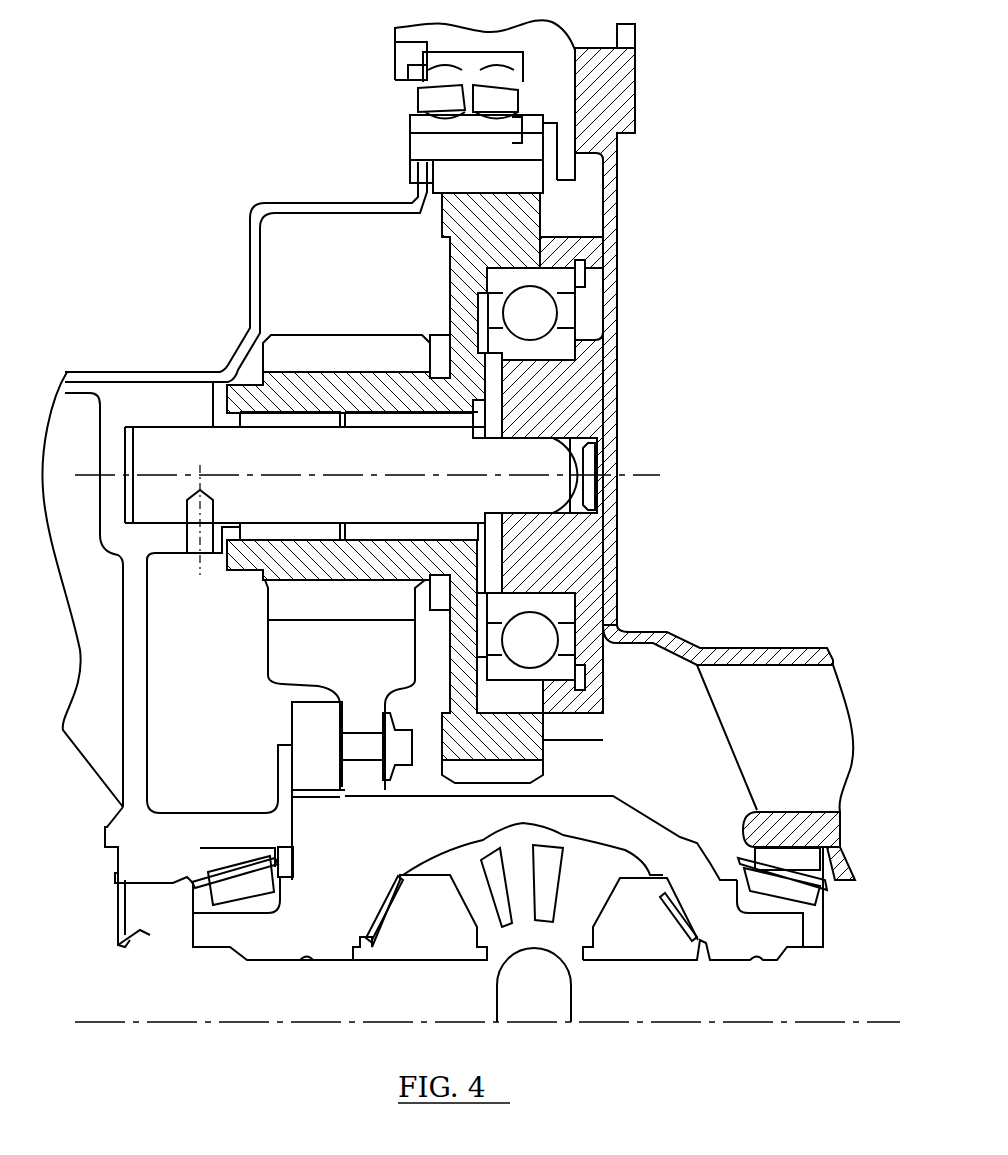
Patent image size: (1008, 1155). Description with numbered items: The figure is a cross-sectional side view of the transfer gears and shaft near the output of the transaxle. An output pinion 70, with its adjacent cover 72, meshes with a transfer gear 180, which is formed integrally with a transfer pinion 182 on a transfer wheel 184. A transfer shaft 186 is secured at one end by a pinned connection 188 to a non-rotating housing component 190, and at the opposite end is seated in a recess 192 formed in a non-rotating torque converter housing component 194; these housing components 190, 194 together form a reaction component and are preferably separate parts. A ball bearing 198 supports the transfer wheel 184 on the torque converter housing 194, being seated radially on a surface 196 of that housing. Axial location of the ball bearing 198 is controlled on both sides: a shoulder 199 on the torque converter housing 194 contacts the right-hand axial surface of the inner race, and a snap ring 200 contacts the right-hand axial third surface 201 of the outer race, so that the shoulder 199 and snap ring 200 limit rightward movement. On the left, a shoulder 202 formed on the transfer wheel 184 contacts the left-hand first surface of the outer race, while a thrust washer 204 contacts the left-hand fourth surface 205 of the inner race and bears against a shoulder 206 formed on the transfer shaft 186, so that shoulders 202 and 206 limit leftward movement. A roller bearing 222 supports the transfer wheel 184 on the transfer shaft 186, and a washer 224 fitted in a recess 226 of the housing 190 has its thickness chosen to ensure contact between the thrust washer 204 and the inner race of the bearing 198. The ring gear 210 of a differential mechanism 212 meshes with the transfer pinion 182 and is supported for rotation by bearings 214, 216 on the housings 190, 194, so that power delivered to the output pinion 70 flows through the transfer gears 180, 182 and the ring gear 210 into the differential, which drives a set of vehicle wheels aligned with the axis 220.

The output pinion 70 is at (430, 148).
The cover 72 is at (320, 208).
The transfer gear 180 is at (523, 223).
The transfer pinion 182 is at (322, 362).
The transfer wheel 184 is at (302, 310).
The transfer shaft 186 is at (348, 462).
The pinned connection 188 is at (197, 545).
The housing component 190 is at (130, 773).
The recess 192 is at (567, 462).
The torque converter housing component 194 is at (597, 408).
The surface 196 is at (563, 595).
The ball bearing 198 is at (515, 325).
The shoulder 199 is at (578, 350).
The snap ring 200 is at (587, 678).
The third surface 201 is at (580, 280).
The shoulder 202 is at (487, 293).
The thrust washer 204 is at (577, 387).
The fourth surface 205 is at (498, 352).
The shoulder 206 is at (500, 517).
The ring gear 210 is at (290, 662).
The differential mechanism 212 is at (258, 782).
The bearing 214 is at (236, 880).
The bearing 216 is at (777, 883).
The axis 220 is at (740, 1025).
The roller bearing 222 is at (270, 530).
The washer 224 is at (127, 497).
The recess 226 is at (131, 455).